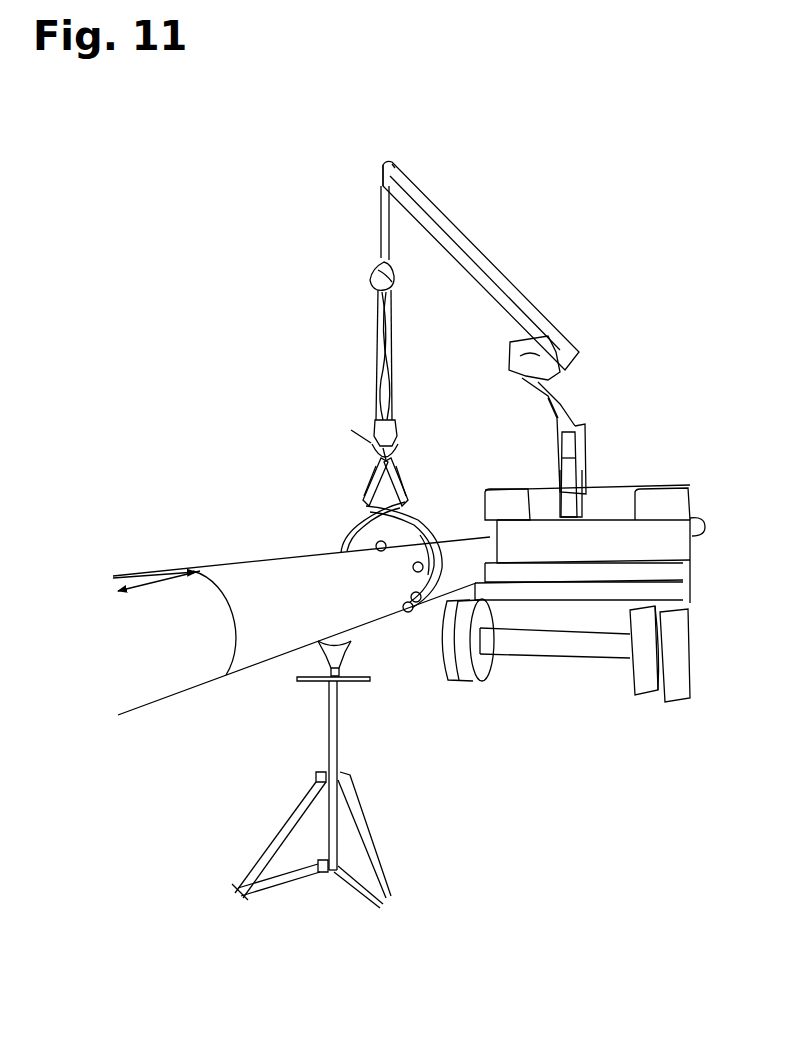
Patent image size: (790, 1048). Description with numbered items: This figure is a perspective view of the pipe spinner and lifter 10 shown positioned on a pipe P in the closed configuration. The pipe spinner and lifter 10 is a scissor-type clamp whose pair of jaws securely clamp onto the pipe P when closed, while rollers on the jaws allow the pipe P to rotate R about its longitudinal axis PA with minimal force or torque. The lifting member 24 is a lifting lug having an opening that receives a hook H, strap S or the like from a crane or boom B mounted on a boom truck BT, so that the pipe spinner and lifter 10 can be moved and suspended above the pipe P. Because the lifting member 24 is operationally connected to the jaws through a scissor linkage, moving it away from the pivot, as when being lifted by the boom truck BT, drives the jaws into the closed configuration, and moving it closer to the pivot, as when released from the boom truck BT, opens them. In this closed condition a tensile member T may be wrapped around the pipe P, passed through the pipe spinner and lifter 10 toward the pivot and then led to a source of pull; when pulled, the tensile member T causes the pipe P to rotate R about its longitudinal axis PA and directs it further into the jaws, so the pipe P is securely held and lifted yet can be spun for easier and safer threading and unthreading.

The boom B is at (556, 307).
The hook H is at (364, 281).
The strap S is at (397, 408).
The lifting member 24 is at (362, 447).
The pipe spinner and lifter 10 is at (432, 492).
The boom truck BT is at (518, 480).
The pipe P is at (338, 609).
The longitudinal axis PA is at (160, 580).
The rotation R is at (402, 606).
The tensile member T is at (395, 632).